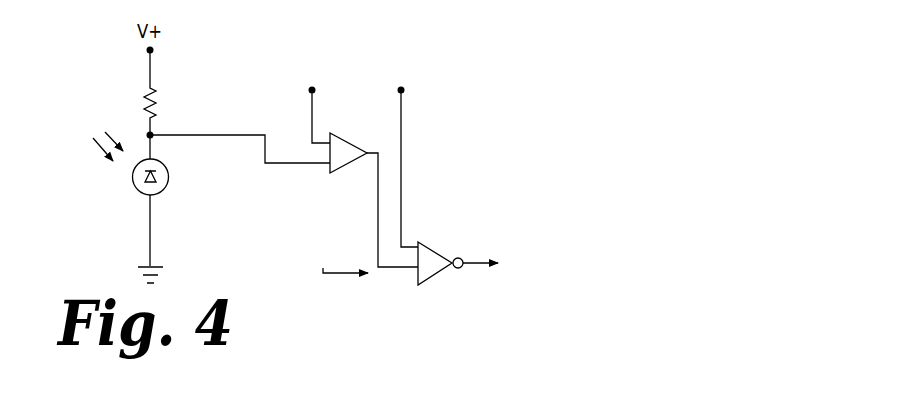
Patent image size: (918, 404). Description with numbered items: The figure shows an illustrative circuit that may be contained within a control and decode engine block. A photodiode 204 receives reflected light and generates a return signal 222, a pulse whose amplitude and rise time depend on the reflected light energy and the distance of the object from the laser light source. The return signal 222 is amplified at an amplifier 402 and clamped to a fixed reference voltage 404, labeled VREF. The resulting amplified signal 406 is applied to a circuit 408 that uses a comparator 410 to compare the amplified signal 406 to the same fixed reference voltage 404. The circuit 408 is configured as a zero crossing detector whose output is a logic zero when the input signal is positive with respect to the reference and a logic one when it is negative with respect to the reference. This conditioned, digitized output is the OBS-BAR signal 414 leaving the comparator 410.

The photodiode 204 is at (132, 180).
The return signal 222 is at (283, 165).
The amplifier 402 is at (352, 143).
The fixed reference voltage 404 is at (318, 63).
The amplified signal 406 is at (378, 190).
The zero crossing detector circuit 408 is at (438, 226).
The comparator 410 is at (452, 272).
The OBS_BAR signal 414 is at (545, 230).